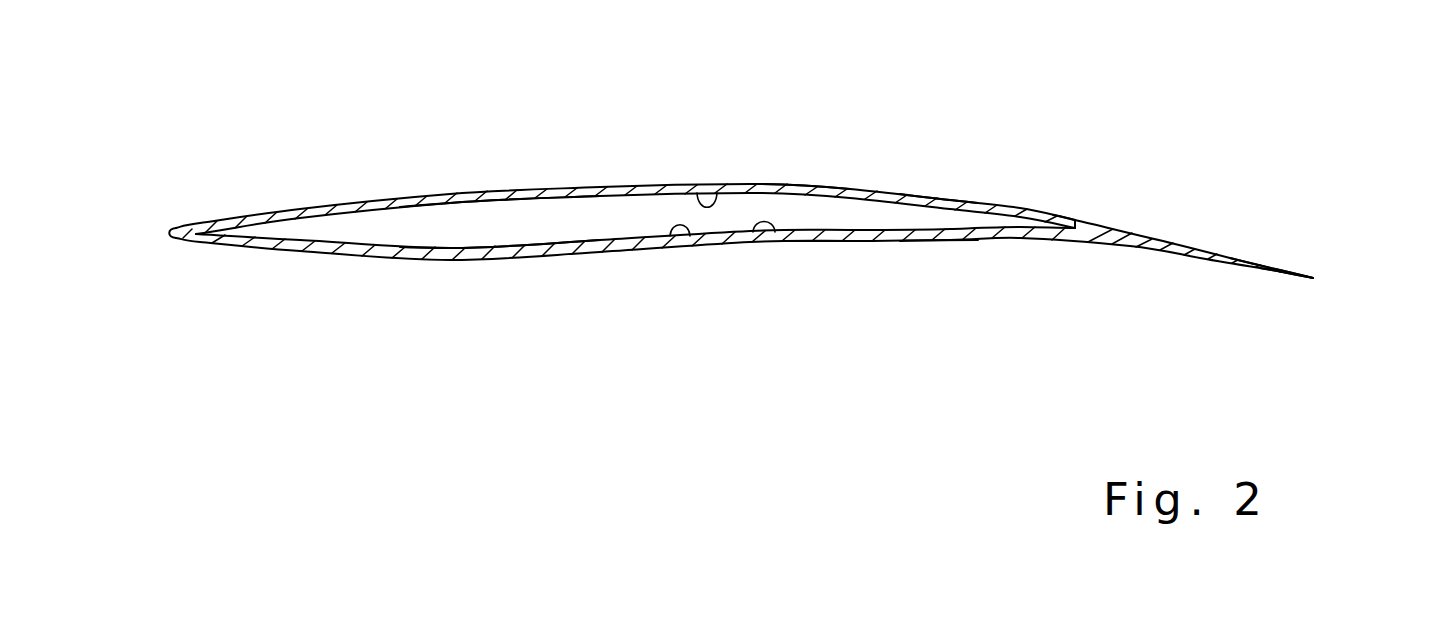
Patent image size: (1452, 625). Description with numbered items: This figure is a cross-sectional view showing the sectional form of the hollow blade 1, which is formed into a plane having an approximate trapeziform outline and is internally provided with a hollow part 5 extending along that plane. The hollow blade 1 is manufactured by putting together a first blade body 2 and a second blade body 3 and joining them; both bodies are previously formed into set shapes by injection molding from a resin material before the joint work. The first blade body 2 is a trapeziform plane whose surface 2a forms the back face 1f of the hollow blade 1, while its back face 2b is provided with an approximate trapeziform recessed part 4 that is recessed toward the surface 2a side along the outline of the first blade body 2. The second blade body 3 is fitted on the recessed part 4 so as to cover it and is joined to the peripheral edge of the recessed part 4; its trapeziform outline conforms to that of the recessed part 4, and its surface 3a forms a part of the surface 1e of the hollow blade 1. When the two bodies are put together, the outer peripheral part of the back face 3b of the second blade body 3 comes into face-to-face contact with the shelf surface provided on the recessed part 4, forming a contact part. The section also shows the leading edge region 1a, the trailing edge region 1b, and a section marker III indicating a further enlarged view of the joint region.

The hollow blade 1 is at (859, 190).
The leading edge 1a is at (168, 242).
The trailing edge 1b is at (1313, 278).
The surface of the hollow blade 1e is at (947, 196).
The back face of the hollow blade 1f is at (937, 244).
The first blade body 2 is at (616, 253).
The surface of the first blade body 2a is at (818, 246).
The back face of the first blade body 2b is at (779, 240).
The second blade body 3 is at (591, 185).
The surface of the second blade body 3a is at (777, 185).
The back face of the second blade body 3b is at (697, 190).
The recessed part 4 is at (688, 243).
The hollow part 5 is at (497, 235).
The section III indicator III is at (1086, 193).